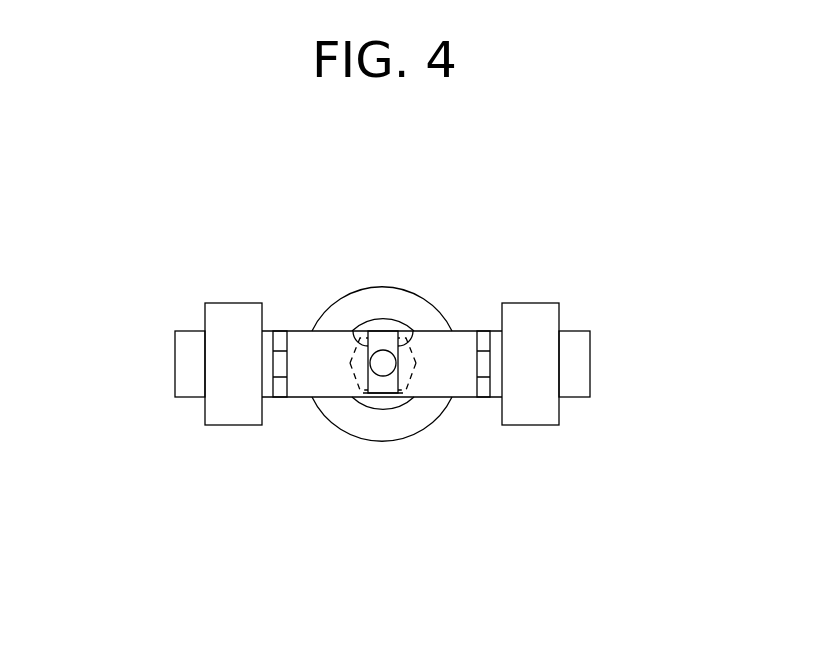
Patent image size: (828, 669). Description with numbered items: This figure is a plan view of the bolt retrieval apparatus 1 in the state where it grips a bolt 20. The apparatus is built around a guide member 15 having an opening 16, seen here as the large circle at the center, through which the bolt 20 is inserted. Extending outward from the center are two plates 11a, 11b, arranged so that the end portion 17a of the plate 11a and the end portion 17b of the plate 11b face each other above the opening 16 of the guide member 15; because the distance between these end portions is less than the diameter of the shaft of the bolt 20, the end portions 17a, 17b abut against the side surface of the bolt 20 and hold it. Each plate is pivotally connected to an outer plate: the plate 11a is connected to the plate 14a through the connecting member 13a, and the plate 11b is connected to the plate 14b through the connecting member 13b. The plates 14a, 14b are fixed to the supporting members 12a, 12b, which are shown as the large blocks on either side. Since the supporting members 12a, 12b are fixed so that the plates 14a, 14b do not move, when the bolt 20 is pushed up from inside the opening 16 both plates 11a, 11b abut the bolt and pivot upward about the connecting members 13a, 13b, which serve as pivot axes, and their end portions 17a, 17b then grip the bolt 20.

The bolt retrieval apparatus 1 is at (526, 167).
The plate 11a is at (465, 331).
The plate 11b is at (302, 331).
The supporting member 12a is at (538, 303).
The supporting member 12b is at (228, 303).
The connecting member 13a is at (486, 397).
The connecting member 13b is at (280, 397).
The plate 14a is at (577, 331).
The plate 14b is at (190, 331).
The guide member 15 is at (398, 440).
The opening 16 is at (377, 404).
The end portion 17a is at (411, 343).
The end portion 17b is at (356, 343).
The bolt 20 is at (382, 350).